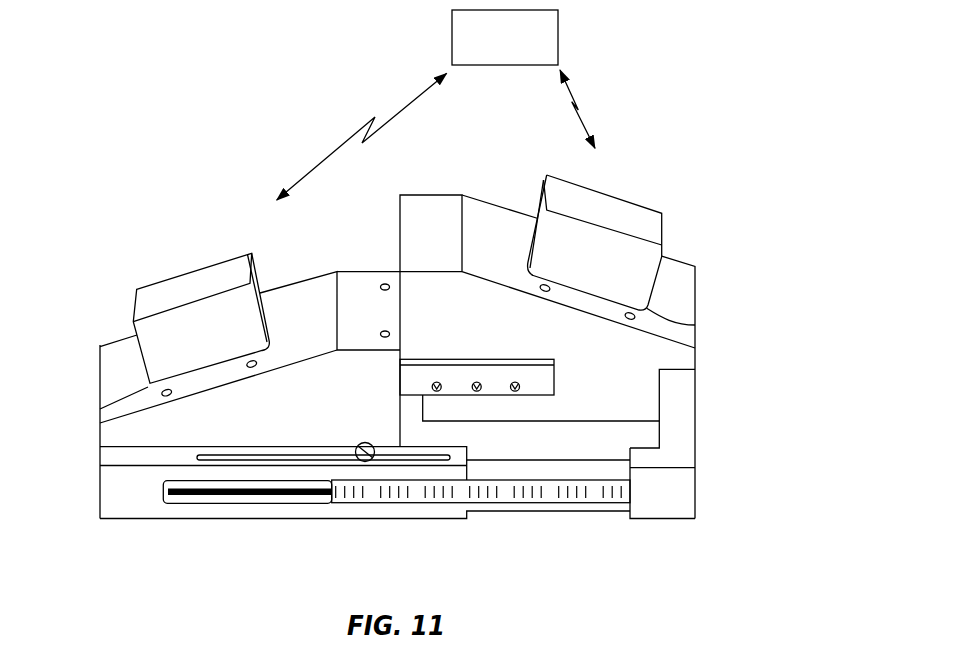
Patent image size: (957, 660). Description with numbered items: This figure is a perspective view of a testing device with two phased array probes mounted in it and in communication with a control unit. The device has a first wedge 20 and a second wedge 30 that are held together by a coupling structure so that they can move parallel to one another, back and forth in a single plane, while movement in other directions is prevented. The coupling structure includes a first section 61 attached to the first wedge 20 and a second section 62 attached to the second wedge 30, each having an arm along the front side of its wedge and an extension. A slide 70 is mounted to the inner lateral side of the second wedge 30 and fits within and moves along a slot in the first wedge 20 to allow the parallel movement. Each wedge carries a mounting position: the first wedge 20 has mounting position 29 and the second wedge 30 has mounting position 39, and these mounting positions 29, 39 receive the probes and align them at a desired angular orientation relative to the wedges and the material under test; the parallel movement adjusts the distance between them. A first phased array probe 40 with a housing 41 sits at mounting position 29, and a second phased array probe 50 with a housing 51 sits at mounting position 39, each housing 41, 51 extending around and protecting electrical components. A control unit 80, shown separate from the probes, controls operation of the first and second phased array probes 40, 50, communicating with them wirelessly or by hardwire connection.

The first wedge 20 is at (128, 357).
The mounting position 29 is at (103, 409).
The second wedge 30 is at (673, 290).
The mounting position 39 is at (696, 326).
The first phased array probe 40 is at (164, 295).
The housing 41 is at (155, 297).
The second phased array probe 50 is at (657, 206).
The housing 51 is at (648, 228).
The first section 61 is at (125, 497).
The second section 62 is at (680, 497).
The slide 70 is at (538, 376).
The control unit 80 is at (436, 105).